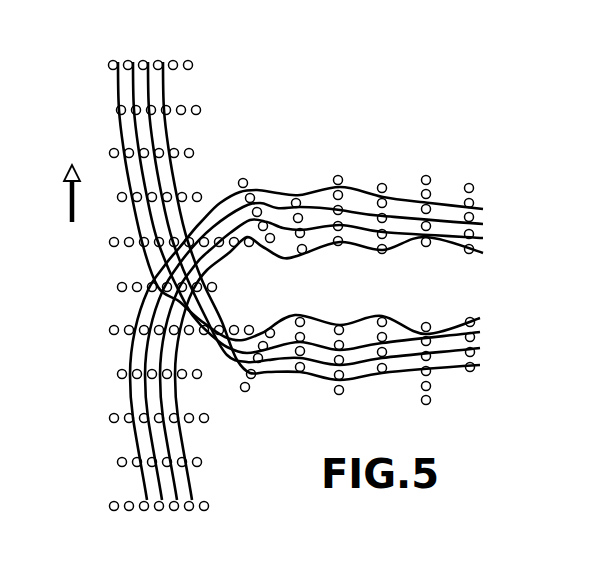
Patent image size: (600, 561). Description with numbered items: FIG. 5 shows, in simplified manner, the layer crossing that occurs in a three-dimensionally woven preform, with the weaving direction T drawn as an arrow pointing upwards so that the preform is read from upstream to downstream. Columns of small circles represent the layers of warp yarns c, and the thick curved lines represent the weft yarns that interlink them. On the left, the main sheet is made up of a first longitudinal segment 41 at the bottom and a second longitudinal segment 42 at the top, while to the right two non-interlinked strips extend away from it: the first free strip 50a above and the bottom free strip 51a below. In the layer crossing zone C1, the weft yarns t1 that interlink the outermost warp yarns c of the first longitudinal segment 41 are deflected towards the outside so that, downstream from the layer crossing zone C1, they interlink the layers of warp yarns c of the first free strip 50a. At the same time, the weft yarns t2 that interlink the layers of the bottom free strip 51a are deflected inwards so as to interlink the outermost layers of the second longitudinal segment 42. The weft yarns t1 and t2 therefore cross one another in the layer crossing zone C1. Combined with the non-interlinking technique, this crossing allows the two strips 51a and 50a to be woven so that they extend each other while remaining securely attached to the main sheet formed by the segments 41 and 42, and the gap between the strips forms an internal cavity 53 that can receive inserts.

The second longitudinal segment 42 is at (204, 53).
The first longitudinal segment 41 is at (208, 520).
The layer crossing zone C1 is at (101, 243).
The first free strip 50a is at (490, 183).
The bottom free strip 51a is at (492, 305).
The internal cavity 53 is at (327, 294).
The weaving direction T is at (60, 193).
The weft yarns t1 is at (447, 237).
The weft yarns t2 is at (160, 128).
The warp yarns c is at (338, 176).